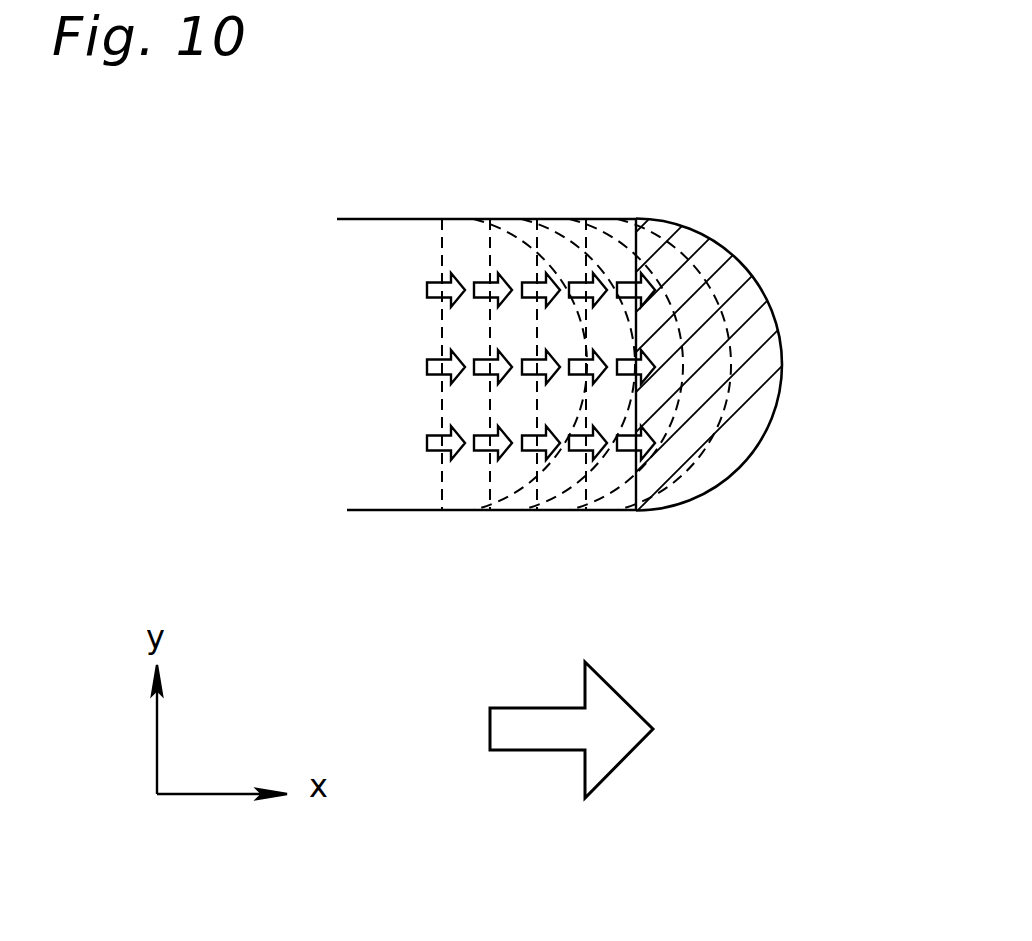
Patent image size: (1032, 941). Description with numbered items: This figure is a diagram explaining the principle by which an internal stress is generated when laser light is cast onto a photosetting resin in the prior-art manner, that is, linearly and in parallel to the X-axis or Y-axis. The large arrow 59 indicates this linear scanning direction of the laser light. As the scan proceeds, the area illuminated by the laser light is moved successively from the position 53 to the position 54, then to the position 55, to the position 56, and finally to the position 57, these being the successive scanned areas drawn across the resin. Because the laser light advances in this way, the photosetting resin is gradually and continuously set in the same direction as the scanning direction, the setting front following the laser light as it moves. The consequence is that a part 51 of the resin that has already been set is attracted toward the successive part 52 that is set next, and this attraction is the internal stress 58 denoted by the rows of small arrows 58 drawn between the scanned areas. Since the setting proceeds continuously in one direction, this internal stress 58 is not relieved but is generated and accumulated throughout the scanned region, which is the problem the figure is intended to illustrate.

The part of the resin already set 51 is at (377, 350).
The successive part 52 is at (752, 320).
The scanned area position 53 is at (562, 500).
The scanned area position 54 is at (625, 500).
The scanned area position 55 is at (727, 476).
The scanned area position 56 is at (737, 420).
The scanned area position 57 is at (782, 367).
The internal stress 58 is at (627, 287).
The arrow 59 is at (620, 747).